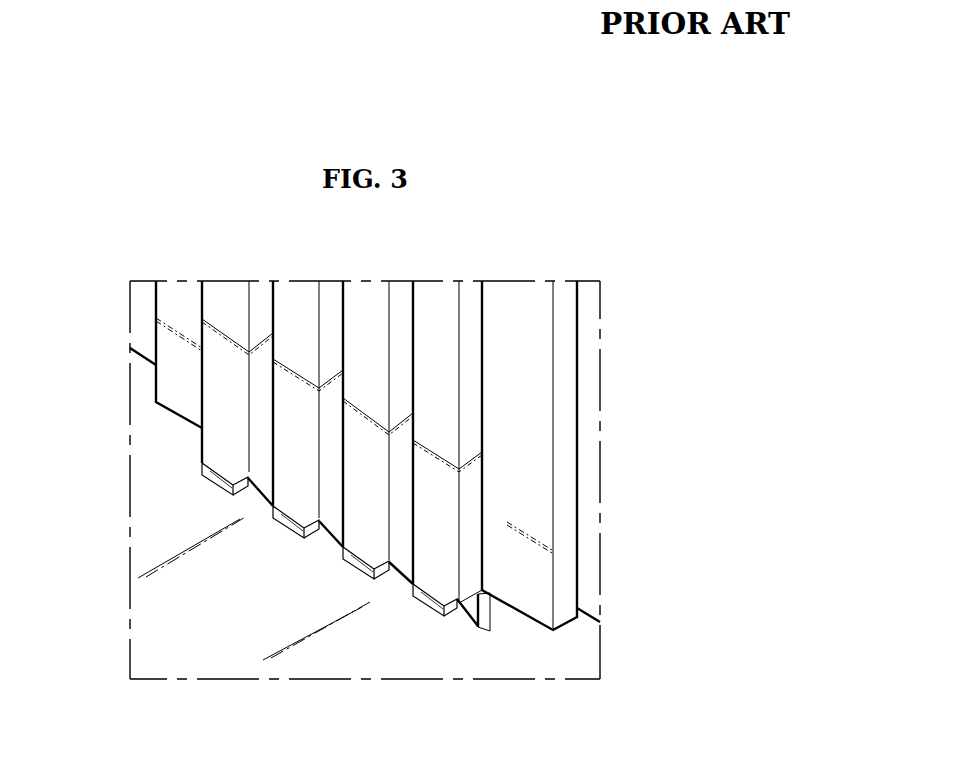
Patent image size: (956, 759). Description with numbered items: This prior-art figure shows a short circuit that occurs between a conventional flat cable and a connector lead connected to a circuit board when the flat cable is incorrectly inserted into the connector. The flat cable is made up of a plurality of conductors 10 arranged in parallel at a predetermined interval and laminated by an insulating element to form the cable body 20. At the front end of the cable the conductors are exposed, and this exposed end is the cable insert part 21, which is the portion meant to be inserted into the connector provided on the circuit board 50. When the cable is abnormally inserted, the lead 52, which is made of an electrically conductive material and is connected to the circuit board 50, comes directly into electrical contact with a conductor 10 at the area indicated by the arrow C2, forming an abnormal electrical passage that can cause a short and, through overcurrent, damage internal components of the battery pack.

The conductor 10 is at (438, 303).
The cable body 20 is at (520, 333).
The cable insert part 21 is at (597, 446).
The circuit board 50 is at (155, 448).
The lead 52 is at (426, 606).
The arrow indicating contact area C2 is at (220, 468).